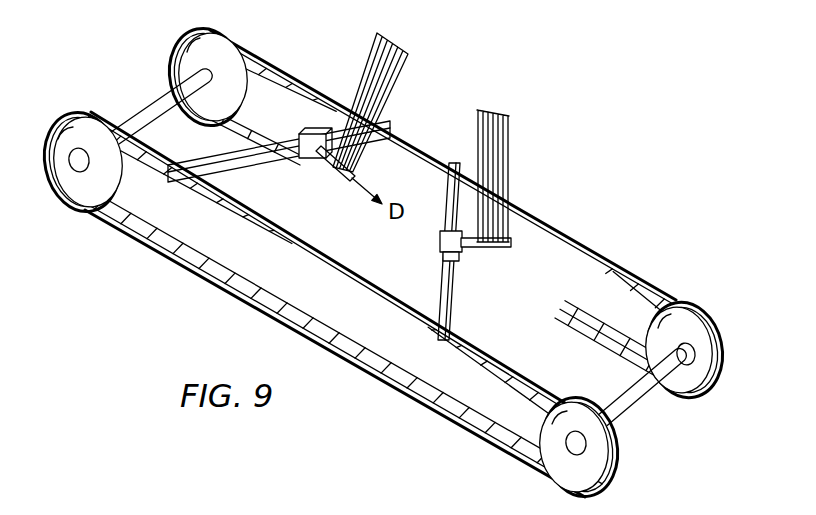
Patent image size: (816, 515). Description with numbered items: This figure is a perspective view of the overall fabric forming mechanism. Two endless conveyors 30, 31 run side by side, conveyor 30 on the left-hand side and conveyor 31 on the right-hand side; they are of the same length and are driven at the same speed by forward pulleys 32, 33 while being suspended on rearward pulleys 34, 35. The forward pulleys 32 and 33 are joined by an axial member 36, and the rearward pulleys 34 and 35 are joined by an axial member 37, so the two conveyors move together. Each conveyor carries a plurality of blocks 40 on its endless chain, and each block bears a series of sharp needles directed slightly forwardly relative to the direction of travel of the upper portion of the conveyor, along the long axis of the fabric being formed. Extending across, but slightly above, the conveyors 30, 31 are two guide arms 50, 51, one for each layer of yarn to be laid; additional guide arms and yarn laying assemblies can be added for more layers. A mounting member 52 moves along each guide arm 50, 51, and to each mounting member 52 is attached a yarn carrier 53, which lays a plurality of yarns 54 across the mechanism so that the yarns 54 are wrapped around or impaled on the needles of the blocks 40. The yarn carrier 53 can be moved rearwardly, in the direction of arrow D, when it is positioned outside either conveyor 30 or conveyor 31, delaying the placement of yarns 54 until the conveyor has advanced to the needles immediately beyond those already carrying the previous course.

The endless conveyor 30 is at (342, 304).
The endless conveyor 31 is at (562, 319).
The forward pulley 32 is at (82, 186).
The forward pulley 33 is at (222, 88).
The rearward pulley 34 is at (596, 472).
The rearward pulley 35 is at (718, 343).
The axial member 36 is at (147, 118).
The axial member 37 is at (636, 397).
The block 40 is at (224, 280).
The guide arm 50 is at (176, 184).
The guide arm 51 is at (444, 343).
The mounting member 52 is at (315, 133).
The yarn carrier 53 is at (358, 162).
The yarns 54 is at (378, 37).